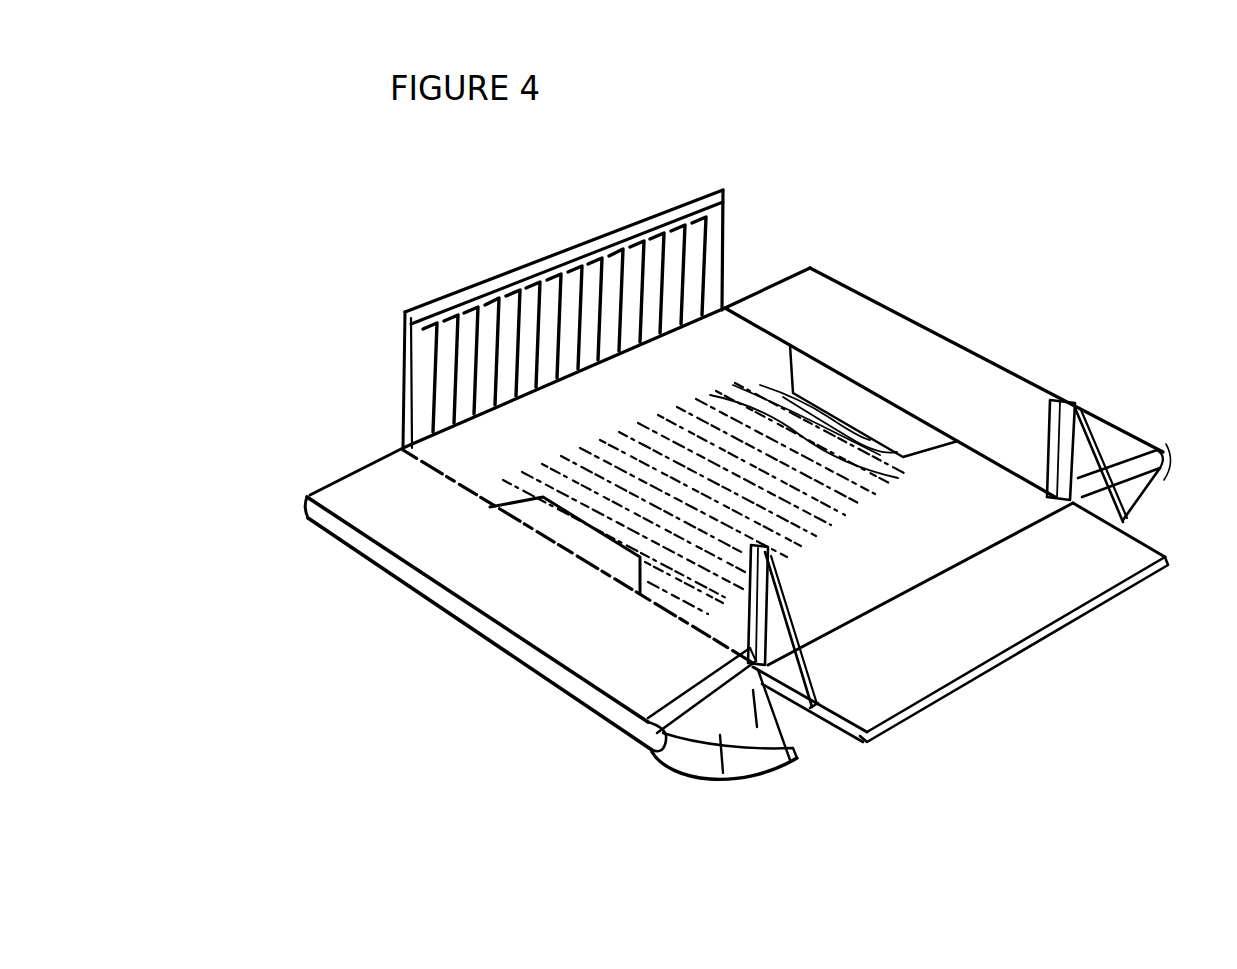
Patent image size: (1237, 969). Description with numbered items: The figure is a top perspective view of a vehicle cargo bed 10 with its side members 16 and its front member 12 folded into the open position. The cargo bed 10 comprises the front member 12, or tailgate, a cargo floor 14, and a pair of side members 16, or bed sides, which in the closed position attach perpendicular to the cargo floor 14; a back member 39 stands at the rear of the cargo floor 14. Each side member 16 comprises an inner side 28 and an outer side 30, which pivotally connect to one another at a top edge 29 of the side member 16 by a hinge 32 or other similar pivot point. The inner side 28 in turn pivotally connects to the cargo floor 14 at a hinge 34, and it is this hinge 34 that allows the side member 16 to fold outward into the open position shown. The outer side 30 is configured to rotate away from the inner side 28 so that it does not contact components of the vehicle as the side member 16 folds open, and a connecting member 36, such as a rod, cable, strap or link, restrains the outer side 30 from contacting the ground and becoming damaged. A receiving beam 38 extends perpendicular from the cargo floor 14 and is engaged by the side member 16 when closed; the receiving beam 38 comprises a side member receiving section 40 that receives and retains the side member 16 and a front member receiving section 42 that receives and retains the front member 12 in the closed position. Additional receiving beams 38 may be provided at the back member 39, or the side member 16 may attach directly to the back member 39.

The cargo bed 10 is at (300, 238).
The front member 12 is at (970, 643).
The cargo floor 14 is at (886, 585).
The side member 16 is at (515, 699).
The inner side 28 is at (648, 676).
The top edge 29 is at (463, 610).
The outer side 30 is at (690, 777).
The hinge 32 is at (360, 537).
The hinge 34 is at (433, 465).
The connecting member 36 is at (757, 708).
The receiving beam 38 is at (1082, 380).
The back member 39 is at (472, 335).
The side member receiving section 40 is at (1051, 393).
The front member receiving section 42 is at (1074, 503).